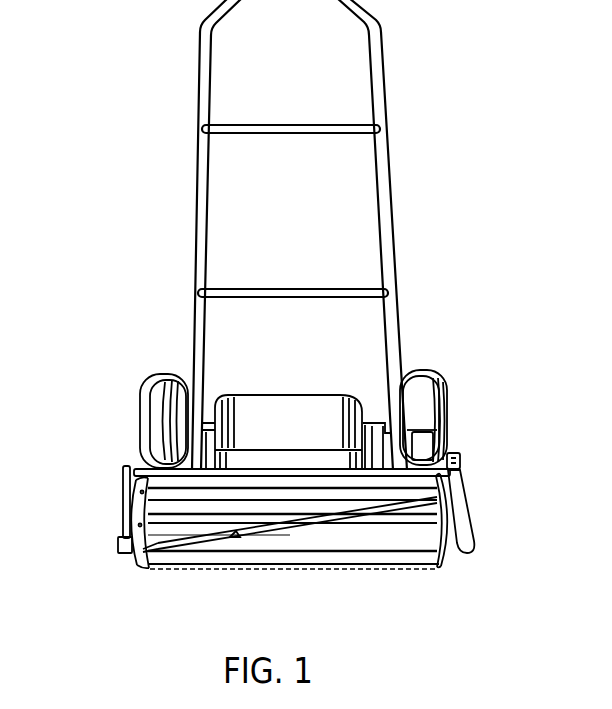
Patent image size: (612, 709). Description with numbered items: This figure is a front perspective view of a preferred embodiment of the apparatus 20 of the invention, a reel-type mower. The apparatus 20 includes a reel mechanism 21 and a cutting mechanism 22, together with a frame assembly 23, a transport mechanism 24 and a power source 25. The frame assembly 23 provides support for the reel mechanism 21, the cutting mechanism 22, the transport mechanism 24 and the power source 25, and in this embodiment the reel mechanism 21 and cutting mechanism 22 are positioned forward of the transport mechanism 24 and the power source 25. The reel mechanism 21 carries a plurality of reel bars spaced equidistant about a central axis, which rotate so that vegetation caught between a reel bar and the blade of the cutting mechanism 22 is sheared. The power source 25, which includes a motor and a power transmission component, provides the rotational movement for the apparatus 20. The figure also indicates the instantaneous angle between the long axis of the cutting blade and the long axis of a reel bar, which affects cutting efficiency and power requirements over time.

The apparatus 20 is at (395, 263).
The reel mechanism 21 is at (123, 515).
The cutting mechanism 22 is at (288, 535).
The frame assembly 23 is at (390, 172).
The transport mechanism 24 is at (408, 372).
The power source 25 is at (267, 394).